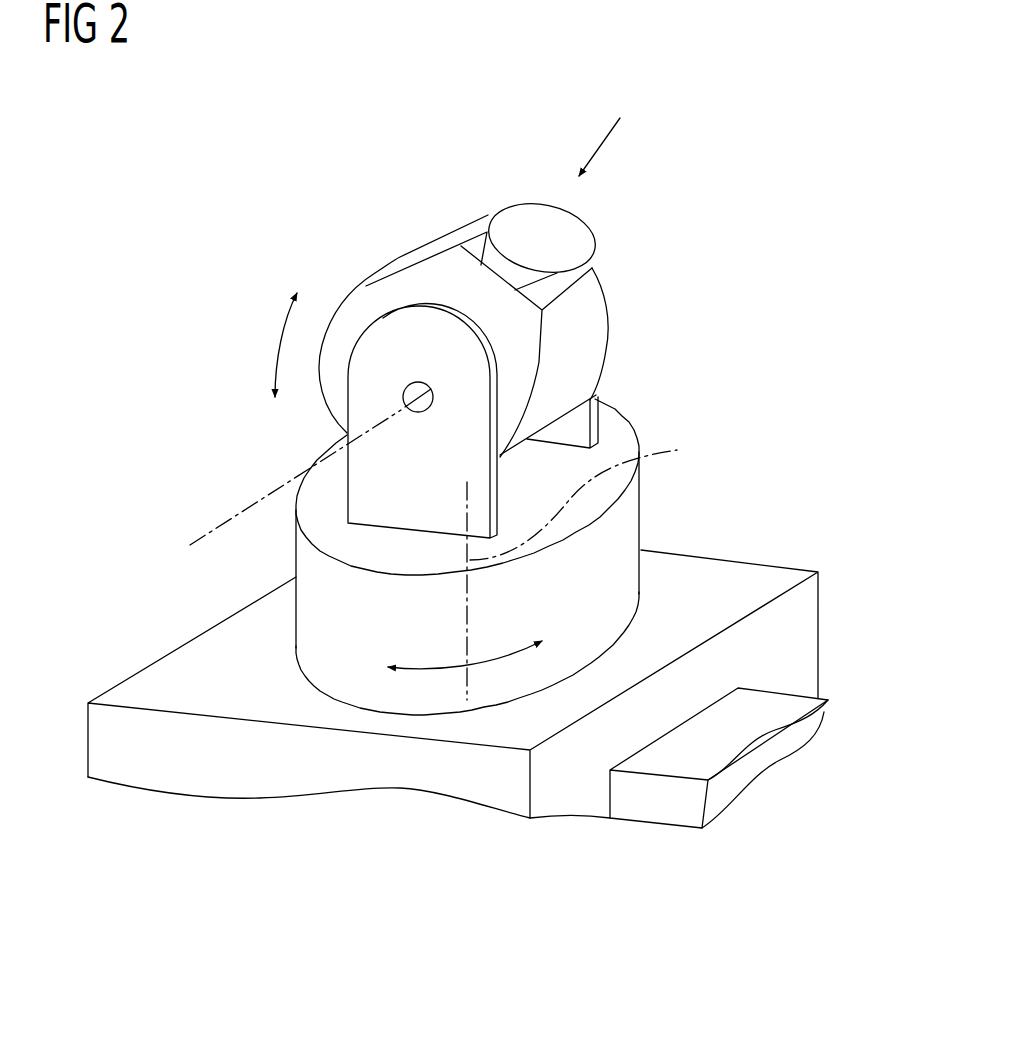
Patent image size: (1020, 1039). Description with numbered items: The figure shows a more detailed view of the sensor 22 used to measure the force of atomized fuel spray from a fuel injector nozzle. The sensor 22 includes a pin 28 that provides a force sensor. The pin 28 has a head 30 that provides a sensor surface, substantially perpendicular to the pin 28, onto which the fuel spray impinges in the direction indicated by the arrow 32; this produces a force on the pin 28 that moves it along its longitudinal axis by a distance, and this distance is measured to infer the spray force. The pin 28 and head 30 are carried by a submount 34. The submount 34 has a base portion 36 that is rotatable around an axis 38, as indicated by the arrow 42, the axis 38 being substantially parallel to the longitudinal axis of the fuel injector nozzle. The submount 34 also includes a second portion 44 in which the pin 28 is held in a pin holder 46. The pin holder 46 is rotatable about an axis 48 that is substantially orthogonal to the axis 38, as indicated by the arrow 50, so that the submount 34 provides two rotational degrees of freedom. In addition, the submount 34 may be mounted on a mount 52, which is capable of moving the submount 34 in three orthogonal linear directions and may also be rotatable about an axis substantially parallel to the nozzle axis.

The sensor 22 is at (281, 177).
The pin 28 is at (502, 268).
The head 30 is at (542, 225).
The arrow 32 is at (603, 143).
The submount 34 is at (683, 396).
The base portion 36 is at (612, 554).
The axis 38 is at (587, 564).
The arrow 42 is at (440, 668).
The second portion 44 is at (654, 295).
The pin holder 46 is at (427, 253).
The axis 48 is at (227, 520).
The arrow 50 is at (277, 343).
The mount 52 is at (743, 733).